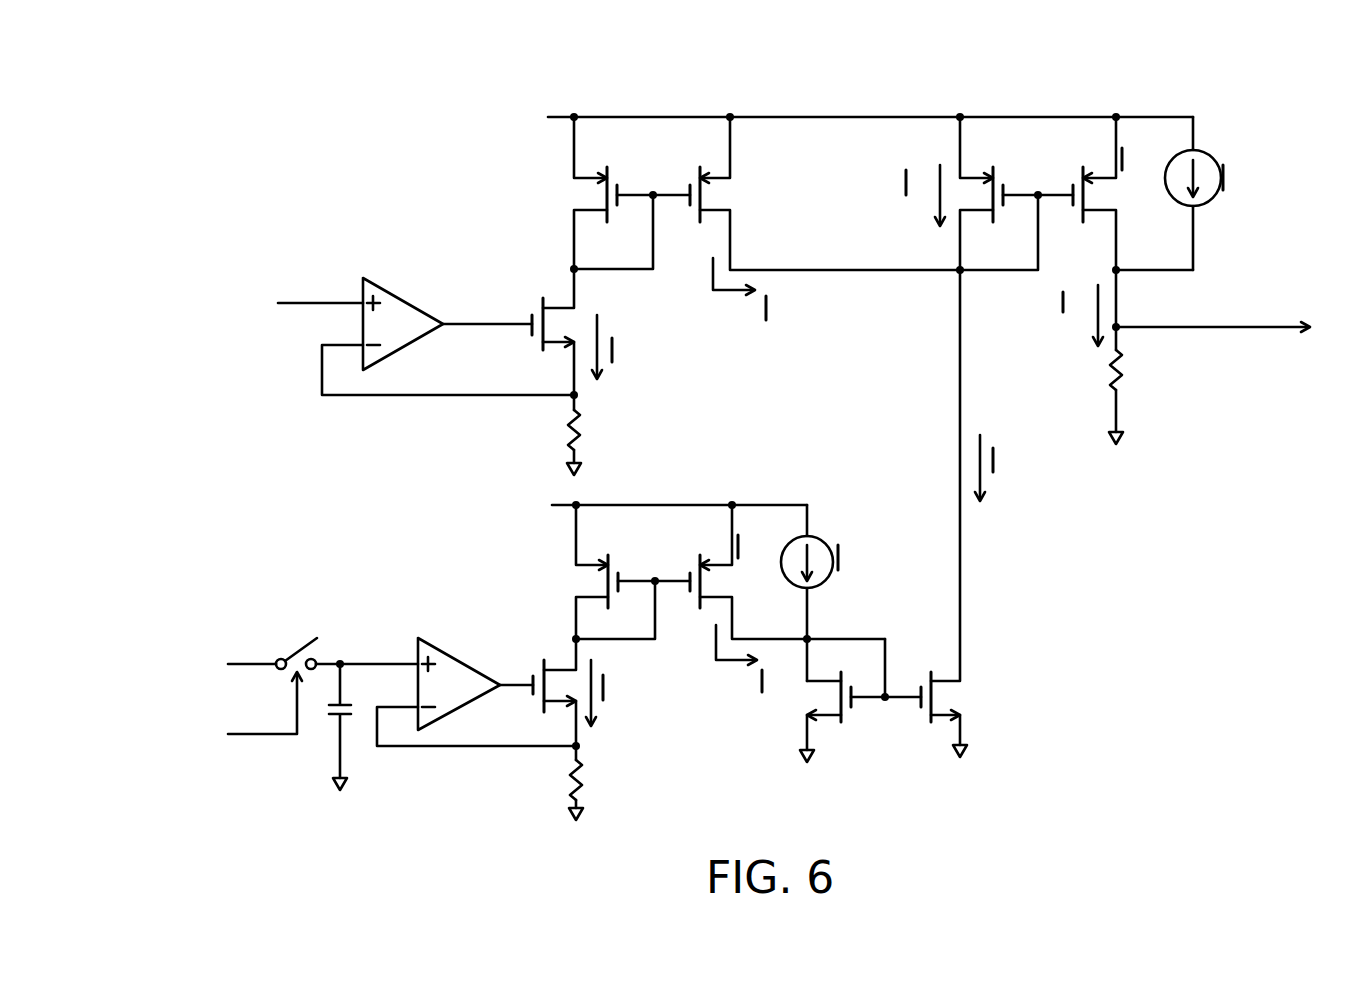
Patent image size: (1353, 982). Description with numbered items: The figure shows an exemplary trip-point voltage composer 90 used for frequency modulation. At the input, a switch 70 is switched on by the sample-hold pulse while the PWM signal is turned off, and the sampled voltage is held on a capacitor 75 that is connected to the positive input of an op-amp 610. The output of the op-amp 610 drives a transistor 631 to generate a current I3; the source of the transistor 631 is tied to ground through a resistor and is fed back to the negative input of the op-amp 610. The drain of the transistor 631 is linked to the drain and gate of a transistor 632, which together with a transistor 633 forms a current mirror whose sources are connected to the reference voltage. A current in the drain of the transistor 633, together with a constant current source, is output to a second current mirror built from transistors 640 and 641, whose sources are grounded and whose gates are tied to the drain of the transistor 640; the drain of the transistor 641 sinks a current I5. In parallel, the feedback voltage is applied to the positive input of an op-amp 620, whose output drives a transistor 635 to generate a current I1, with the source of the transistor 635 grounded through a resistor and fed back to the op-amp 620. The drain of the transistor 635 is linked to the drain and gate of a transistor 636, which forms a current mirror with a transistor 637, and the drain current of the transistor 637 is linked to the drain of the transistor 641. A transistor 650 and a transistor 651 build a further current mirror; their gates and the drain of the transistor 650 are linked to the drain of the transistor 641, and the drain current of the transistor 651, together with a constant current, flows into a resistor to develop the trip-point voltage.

The trip-point voltage composer 90 is at (1333, 90).
The switch 70 is at (300, 652).
The capacitor 75 is at (330, 712).
The op-amp 610 is at (464, 660).
The op-amp 620 is at (407, 300).
The transistor 631 is at (552, 662).
The transistor 632 is at (577, 556).
The transistor 633 is at (714, 565).
The transistor 635 is at (540, 298).
The transistor 636 is at (575, 178).
The transistor 637 is at (714, 178).
The transistor 640 is at (816, 716).
The transistor 641 is at (948, 682).
The transistor 650 is at (962, 178).
The transistor 651 is at (1098, 178).